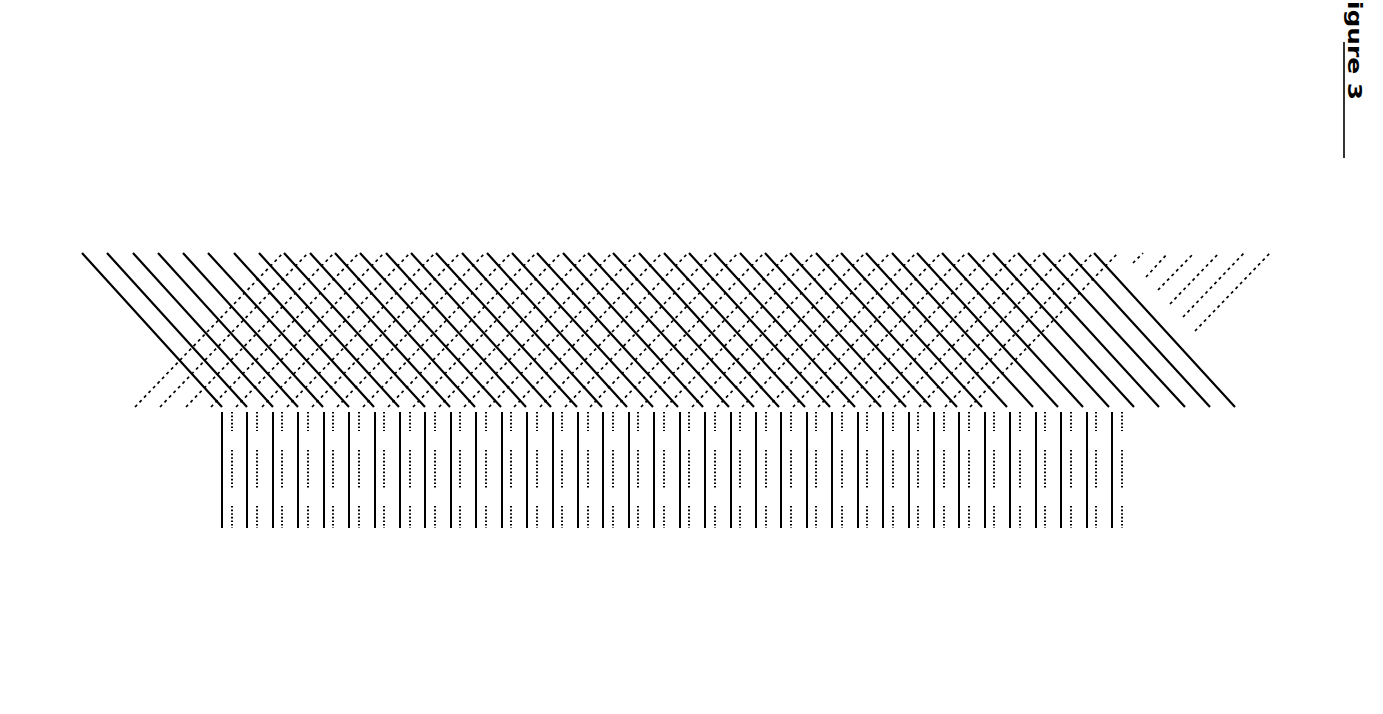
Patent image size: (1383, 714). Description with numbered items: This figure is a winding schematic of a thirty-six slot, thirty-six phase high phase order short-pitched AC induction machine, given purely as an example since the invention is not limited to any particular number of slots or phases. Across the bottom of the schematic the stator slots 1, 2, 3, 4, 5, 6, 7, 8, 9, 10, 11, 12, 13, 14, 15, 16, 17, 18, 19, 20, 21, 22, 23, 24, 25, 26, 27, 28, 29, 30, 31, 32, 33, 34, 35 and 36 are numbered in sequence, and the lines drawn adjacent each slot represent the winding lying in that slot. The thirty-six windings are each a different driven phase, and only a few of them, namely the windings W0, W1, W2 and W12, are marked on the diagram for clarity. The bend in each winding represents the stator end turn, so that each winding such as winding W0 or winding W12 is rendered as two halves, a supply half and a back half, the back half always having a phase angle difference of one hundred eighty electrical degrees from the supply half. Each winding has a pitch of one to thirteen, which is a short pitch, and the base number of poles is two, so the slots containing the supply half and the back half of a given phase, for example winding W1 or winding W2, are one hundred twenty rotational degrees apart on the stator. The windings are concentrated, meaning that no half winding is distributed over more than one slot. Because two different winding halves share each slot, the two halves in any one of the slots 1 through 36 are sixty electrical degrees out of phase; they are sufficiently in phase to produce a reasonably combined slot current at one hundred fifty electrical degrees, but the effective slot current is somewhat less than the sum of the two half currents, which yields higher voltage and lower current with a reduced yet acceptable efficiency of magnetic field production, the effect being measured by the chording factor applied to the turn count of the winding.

The winding W0 is at (370, 264).
The winding W1 is at (396, 264).
The winding W2 is at (424, 267).
The winding W12 is at (676, 262).
The stator slot 1 is at (224, 495).
The stator slot 2 is at (249, 507).
The stator slot 3 is at (274, 495).
The stator slot 4 is at (300, 507).
The stator slot 5 is at (325, 495).
The stator slot 6 is at (351, 507).
The stator slot 7 is at (377, 495).
The stator slot 8 is at (402, 507).
The stator slot 9 is at (428, 495).
The stator slot 10 is at (451, 507).
The stator slot 11 is at (477, 495).
The stator slot 12 is at (503, 507).
The stator slot 13 is at (528, 495).
The stator slot 14 is at (554, 507).
The stator slot 15 is at (579, 495).
The stator slot 16 is at (605, 507).
The stator slot 17 is at (631, 495).
The stator slot 18 is at (656, 507).
The stator slot 19 is at (682, 495).
The stator slot 20 is at (707, 507).
The stator slot 21 is at (733, 495).
The stator slot 22 is at (759, 507).
The stator slot 23 is at (784, 495).
The stator slot 24 is at (810, 507).
The stator slot 25 is at (835, 495).
The stator slot 26 is at (861, 507).
The stator slot 27 is at (887, 495).
The stator slot 28 is at (912, 507).
The stator slot 29 is at (938, 495).
The stator slot 30 is at (963, 507).
The stator slot 31 is at (989, 495).
The stator slot 32 is at (1015, 507).
The stator slot 33 is at (1040, 495).
The stator slot 34 is at (1066, 507).
The stator slot 35 is at (1091, 495).
The stator slot 36 is at (1117, 507).